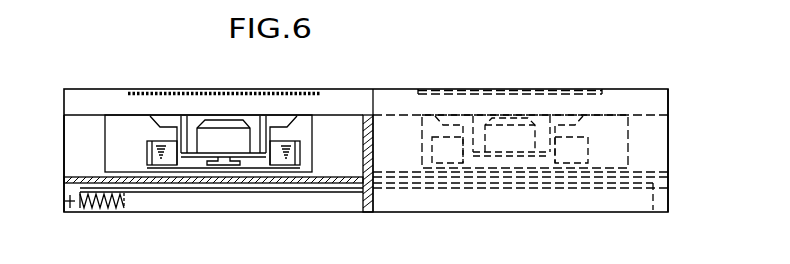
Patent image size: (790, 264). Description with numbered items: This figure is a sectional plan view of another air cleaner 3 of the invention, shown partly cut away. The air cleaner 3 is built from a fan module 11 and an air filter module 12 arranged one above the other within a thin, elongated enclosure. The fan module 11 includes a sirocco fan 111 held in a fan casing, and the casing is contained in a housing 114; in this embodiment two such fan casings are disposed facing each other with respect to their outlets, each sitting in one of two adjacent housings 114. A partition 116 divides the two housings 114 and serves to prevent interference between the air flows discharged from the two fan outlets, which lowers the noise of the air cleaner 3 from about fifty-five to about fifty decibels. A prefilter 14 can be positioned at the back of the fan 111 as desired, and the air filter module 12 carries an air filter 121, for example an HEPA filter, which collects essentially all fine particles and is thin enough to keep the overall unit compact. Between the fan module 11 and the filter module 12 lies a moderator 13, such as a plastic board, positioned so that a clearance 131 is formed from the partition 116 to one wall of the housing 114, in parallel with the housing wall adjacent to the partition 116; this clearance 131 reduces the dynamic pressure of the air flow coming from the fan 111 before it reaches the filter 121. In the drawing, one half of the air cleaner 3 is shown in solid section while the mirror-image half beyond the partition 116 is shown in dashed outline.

The air cleaner 3 is at (628, 89).
The fan module 11 is at (88, 104).
The air filter module 12 is at (210, 194).
The moderator 13 is at (157, 184).
The prefilter 14 is at (163, 92).
The sirocco fan 111 is at (270, 168).
The housing 114 is at (66, 149).
The partition 116 is at (378, 122).
The air filter 121 is at (106, 208).
The clearance 131 is at (375, 76).